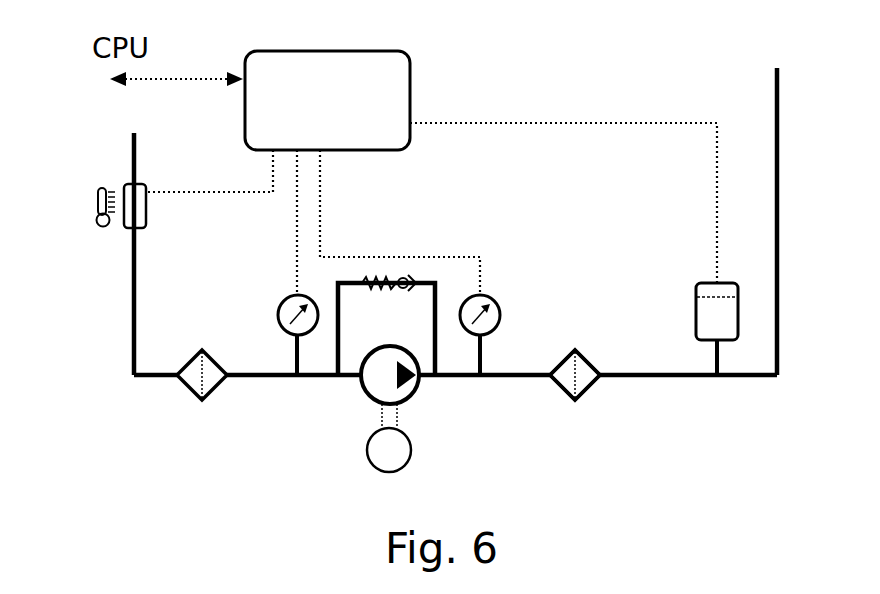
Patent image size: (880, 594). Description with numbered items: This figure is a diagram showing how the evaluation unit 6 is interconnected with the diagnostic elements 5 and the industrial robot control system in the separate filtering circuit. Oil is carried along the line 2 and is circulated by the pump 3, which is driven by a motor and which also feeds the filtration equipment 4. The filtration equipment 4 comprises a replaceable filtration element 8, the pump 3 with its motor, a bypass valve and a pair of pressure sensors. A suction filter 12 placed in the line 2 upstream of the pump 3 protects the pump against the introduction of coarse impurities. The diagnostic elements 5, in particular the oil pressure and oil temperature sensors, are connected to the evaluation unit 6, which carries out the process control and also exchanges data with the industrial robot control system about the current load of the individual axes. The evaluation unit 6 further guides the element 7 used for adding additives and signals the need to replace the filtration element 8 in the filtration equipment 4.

The line 2 is at (133, 345).
The pump 3 is at (406, 398).
The filtration equipment 4 is at (575, 400).
The diagnostic element 5 is at (277, 305).
The evaluation unit 6 is at (327, 100).
The element for adding an additive 7 is at (696, 285).
The filtration element 8 is at (580, 365).
The suction filter 12 is at (197, 405).